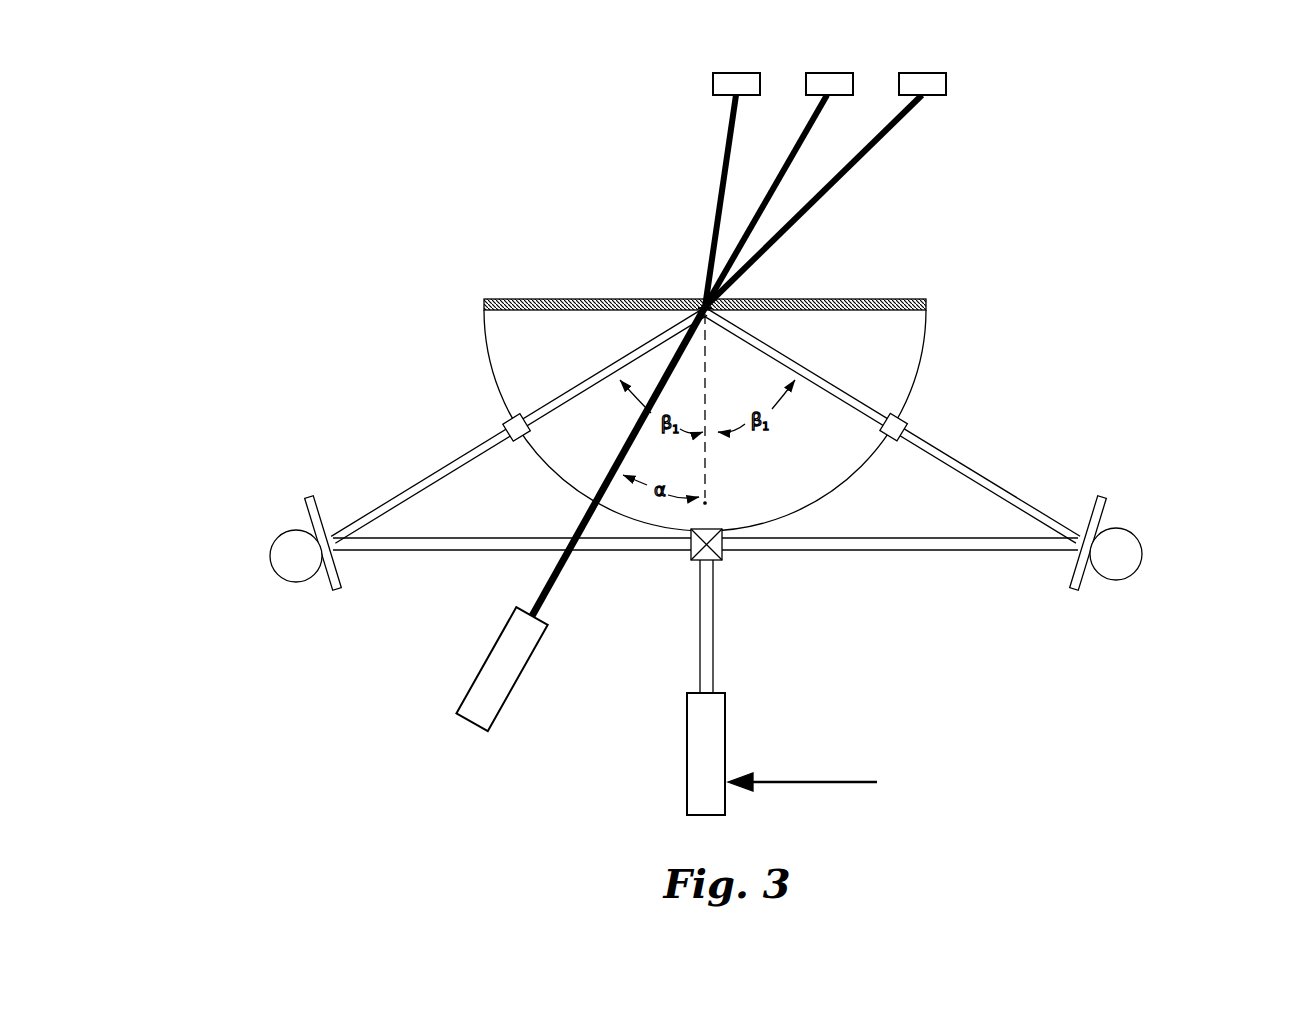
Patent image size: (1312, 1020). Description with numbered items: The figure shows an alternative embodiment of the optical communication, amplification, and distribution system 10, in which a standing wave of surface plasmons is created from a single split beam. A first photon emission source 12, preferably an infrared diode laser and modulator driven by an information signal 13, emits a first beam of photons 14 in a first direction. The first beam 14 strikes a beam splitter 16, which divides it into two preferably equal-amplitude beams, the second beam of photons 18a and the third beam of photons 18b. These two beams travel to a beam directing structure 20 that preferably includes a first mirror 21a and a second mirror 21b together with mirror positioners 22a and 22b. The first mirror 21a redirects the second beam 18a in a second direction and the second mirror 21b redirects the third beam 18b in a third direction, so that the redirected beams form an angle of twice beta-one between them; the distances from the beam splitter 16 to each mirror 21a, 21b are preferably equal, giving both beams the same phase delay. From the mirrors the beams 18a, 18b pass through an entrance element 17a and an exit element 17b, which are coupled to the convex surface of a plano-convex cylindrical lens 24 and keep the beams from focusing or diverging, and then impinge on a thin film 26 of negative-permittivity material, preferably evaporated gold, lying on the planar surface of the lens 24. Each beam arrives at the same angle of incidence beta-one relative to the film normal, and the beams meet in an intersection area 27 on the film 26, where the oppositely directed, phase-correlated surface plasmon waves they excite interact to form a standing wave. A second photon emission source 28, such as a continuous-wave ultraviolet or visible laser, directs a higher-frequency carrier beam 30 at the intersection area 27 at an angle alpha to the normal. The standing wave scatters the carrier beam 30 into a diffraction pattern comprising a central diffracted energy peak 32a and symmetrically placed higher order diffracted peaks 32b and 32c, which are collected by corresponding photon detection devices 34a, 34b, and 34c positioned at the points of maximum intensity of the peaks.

The optical communication, amplification, and distribution system 10 is at (1245, 155).
The first photon emission source 12 is at (727, 752).
The information signal 13 is at (805, 778).
The first beam of photons 14 is at (714, 665).
The beam splitter 16 is at (720, 561).
The entrance element 17a is at (910, 428).
The exit element 17b is at (500, 421).
The second beam of photons 18a is at (440, 468).
The third beam of photons 18b is at (940, 449).
The beam directing structure 20 is at (238, 491).
The first mirror 21a is at (337, 592).
The second mirror 21b is at (1074, 590).
The mirror positioner 22a is at (270, 558).
The mirror positioner 22b is at (1143, 557).
The plano-convex cylindrical lens 24 is at (918, 378).
The thin film 26 is at (927, 306).
The intersection area 27 is at (741, 291).
The second photon emission source 28 is at (513, 695).
The carrier beam 30 is at (550, 598).
The central diffracted energy peak 32a is at (813, 133).
The higher order diffracted peak 32b is at (893, 132).
The higher order diffracted peak 32c is at (735, 135).
The photon detection device 34a is at (833, 96).
The photon detection device 34b is at (930, 96).
The photon detection device 34c is at (743, 96).